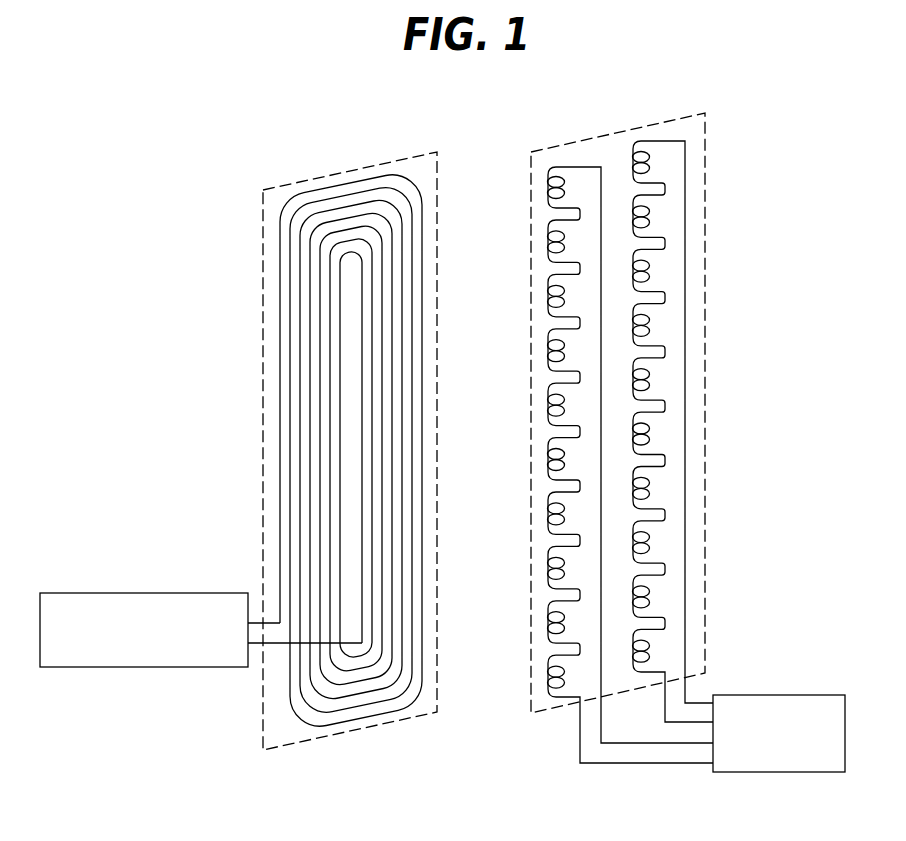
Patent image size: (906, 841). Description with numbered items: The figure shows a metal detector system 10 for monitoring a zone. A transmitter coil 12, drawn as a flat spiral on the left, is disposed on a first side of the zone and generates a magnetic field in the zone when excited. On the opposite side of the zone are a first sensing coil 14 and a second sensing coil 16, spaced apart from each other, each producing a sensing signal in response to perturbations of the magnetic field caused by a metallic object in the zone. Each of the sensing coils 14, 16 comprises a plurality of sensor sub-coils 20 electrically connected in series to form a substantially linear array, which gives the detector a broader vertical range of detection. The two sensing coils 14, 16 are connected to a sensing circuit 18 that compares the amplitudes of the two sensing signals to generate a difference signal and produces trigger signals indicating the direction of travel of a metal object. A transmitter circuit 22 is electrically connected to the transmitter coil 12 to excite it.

The metal detector system 10 is at (508, 808).
The transmitter coil 12 is at (280, 219).
The first sensing coil 14 is at (686, 159).
The second sensing coil 16 is at (550, 172).
The sensing circuit 18 is at (762, 695).
The sensor sub-coils 20 is at (549, 257).
The transmitter circuit 22 is at (128, 593).